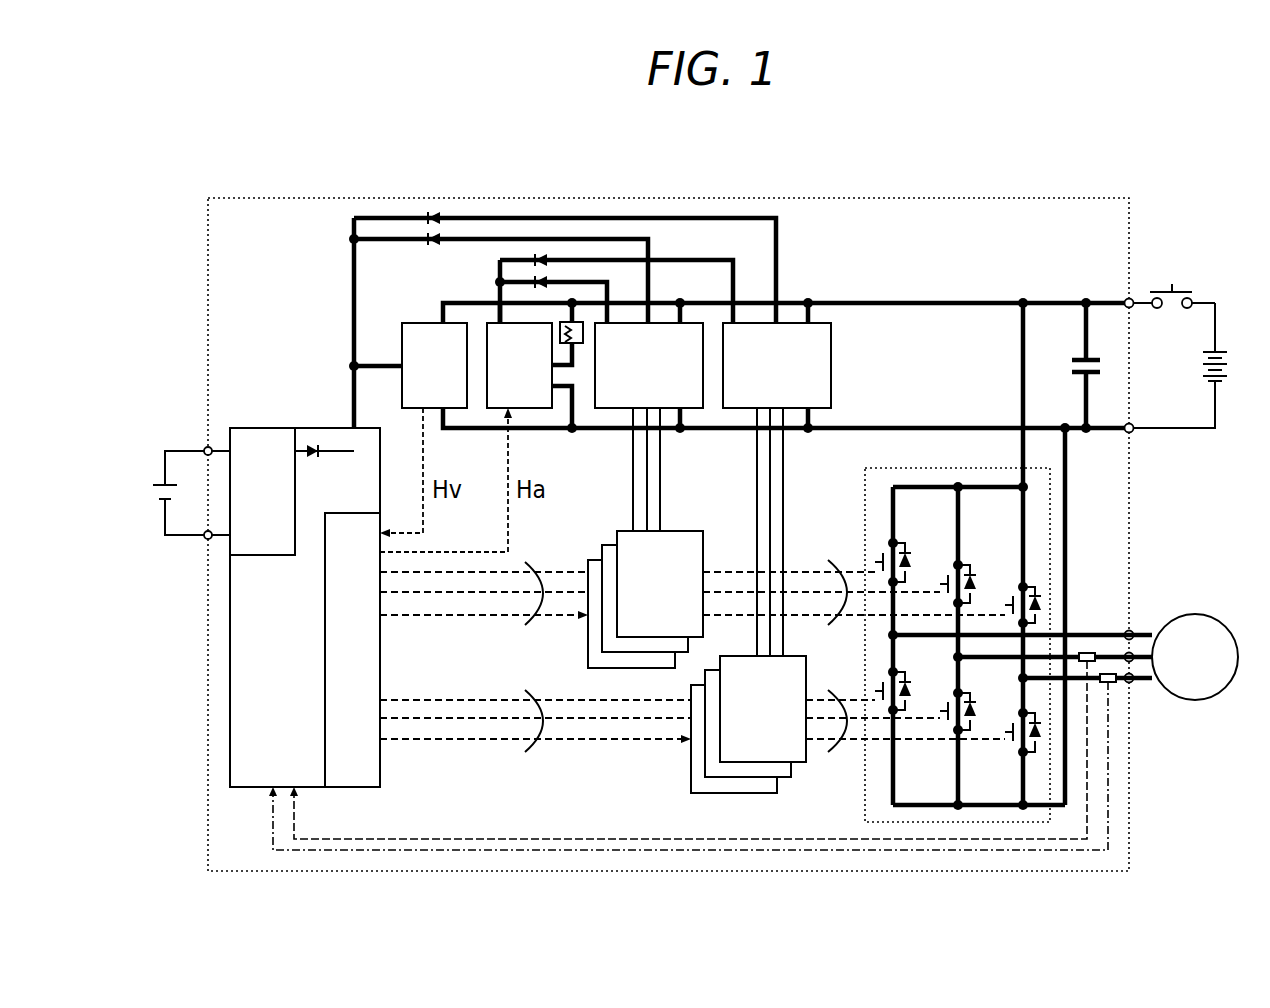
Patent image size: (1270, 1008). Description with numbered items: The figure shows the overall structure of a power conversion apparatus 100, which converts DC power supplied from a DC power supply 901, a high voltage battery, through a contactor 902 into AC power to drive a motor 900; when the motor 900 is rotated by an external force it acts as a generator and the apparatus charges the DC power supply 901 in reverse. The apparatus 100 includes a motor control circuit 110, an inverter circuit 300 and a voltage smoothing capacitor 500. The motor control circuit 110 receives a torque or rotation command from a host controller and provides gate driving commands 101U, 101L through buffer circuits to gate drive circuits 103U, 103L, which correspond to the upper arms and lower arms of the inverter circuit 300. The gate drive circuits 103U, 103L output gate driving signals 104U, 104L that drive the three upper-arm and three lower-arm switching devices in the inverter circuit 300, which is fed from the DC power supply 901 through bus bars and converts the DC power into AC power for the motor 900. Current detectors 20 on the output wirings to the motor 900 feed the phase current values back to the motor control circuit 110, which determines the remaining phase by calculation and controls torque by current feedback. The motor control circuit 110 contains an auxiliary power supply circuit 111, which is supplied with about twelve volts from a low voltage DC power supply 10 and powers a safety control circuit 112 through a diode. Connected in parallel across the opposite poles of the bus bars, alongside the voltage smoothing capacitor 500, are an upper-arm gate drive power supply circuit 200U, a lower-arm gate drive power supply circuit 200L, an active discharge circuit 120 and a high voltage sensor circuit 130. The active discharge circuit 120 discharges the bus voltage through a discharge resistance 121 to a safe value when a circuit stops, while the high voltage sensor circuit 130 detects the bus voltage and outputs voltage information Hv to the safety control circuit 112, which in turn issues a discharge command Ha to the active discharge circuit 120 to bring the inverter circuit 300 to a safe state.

The DC power supply (low voltage battery) 10 is at (191, 475).
The current detector 20 is at (1112, 686).
The power conversion apparatus 100 is at (1131, 217).
The motor control circuit 110 is at (305, 607).
The auxiliary power supply circuit 111 is at (292, 491).
The safety control circuit 112 is at (352, 650).
The active discharge circuit 120 is at (519, 365).
The discharge resistance 121 is at (575, 328).
The high voltage sensor circuit 130 is at (434, 365).
The upper-arm gate drive power supply circuit 200U is at (649, 427).
The lower-arm gate drive power supply circuit 200L is at (777, 489).
The gate drive circuit 103U is at (645, 599).
The gate drive circuit 103L is at (748, 724).
The gate driving command 101U is at (497, 610).
The gate driving command 101L is at (549, 739).
The gate driving signal 104U is at (854, 608).
The gate driving signal 104L is at (905, 739).
The inverter circuit 300 is at (865, 511).
The voltage smoothing capacitor 500 is at (1078, 356).
The motor 900 is at (1065, 657).
The DC power supply 901 is at (1220, 386).
The contactor 902 is at (1214, 274).